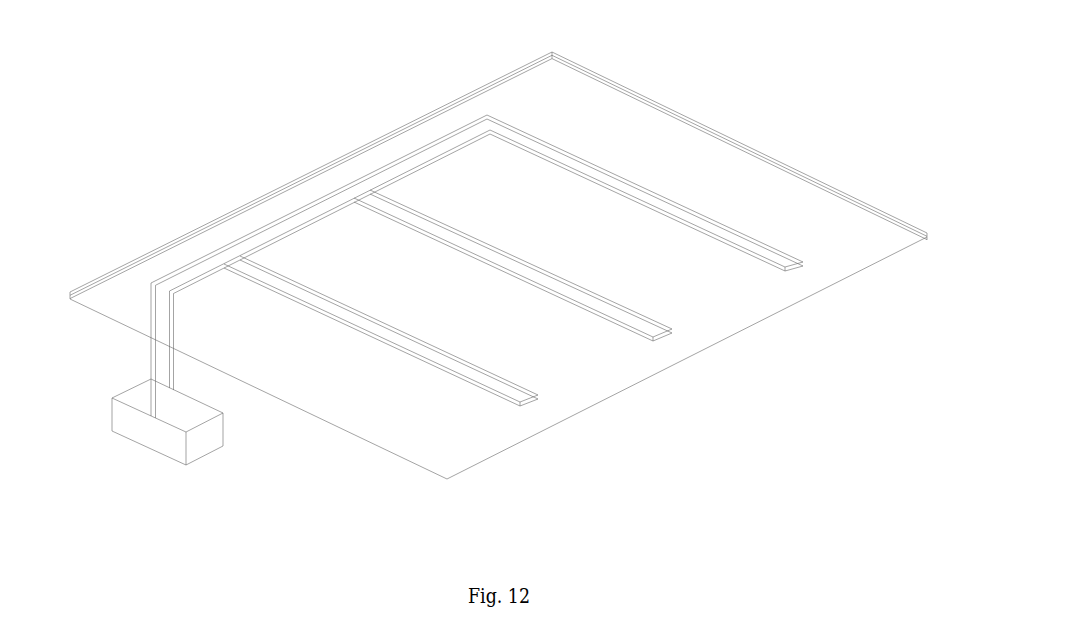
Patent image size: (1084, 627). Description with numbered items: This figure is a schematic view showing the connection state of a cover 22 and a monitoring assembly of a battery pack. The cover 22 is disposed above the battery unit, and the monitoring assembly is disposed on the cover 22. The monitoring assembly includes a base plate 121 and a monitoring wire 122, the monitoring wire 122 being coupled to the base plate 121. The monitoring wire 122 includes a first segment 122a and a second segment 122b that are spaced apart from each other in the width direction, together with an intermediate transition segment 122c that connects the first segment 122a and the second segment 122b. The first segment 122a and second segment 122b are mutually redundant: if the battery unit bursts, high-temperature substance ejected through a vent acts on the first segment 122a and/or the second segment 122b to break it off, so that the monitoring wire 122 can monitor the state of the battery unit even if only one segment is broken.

The cover 22 is at (498, 304).
The base plate 121 is at (348, 398).
The monitoring wire 122 is at (538, 327).
The first segment 122a is at (510, 381).
The second segment 122b is at (493, 393).
The intermediate transition segment 122c is at (530, 403).